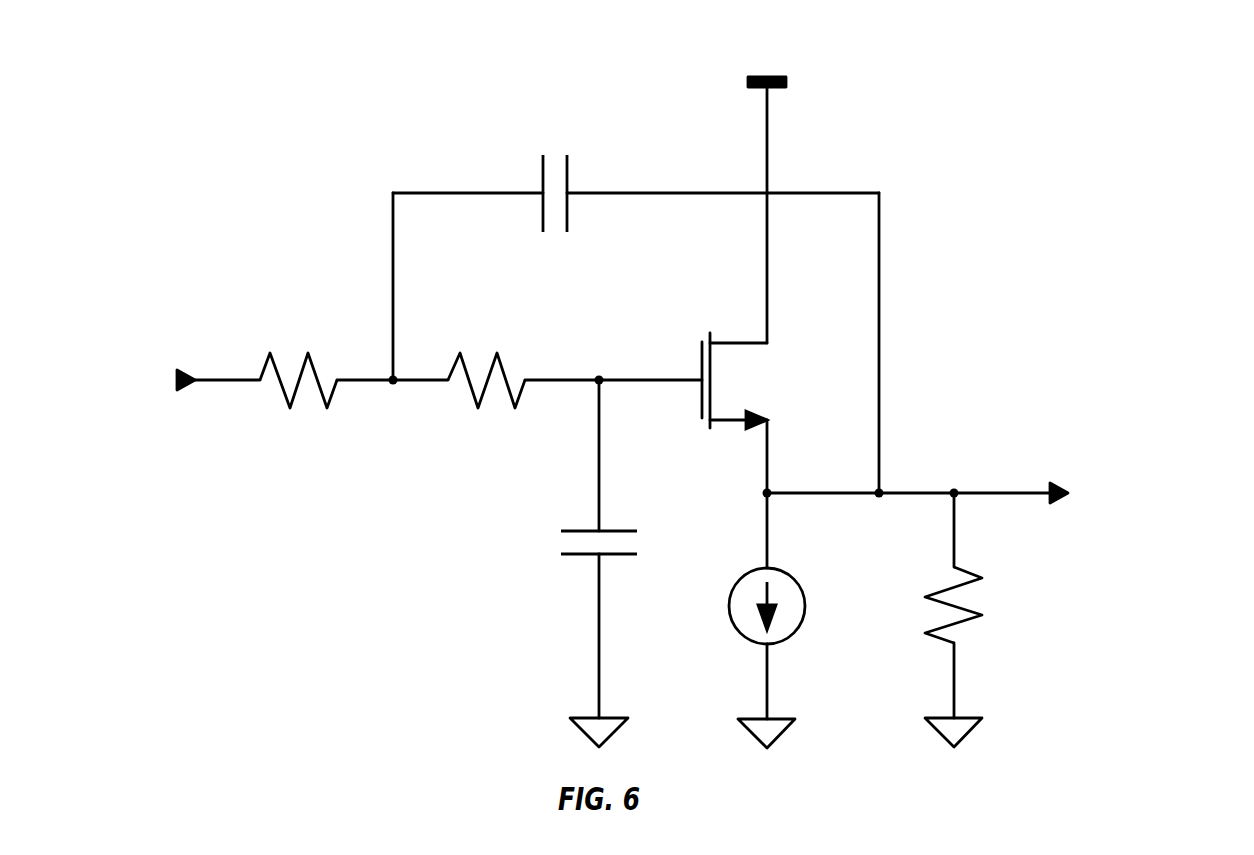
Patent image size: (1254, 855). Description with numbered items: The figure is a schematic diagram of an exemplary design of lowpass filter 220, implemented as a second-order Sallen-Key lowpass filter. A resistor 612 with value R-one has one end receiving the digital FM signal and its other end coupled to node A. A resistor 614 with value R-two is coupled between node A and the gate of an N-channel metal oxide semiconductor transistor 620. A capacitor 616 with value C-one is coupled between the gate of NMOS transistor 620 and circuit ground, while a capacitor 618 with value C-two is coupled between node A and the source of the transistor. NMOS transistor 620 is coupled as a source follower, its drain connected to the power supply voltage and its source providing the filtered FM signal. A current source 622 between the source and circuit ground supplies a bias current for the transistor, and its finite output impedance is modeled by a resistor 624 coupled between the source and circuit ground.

The lowpass filter 220 is at (998, 187).
The resistor 612 is at (270, 360).
The resistor 614 is at (500, 360).
The capacitor 616 is at (624, 528).
The capacitor 618 is at (568, 172).
The NMOS transistor 620 is at (749, 342).
The current source 622 is at (790, 574).
The resistor 624 is at (938, 592).